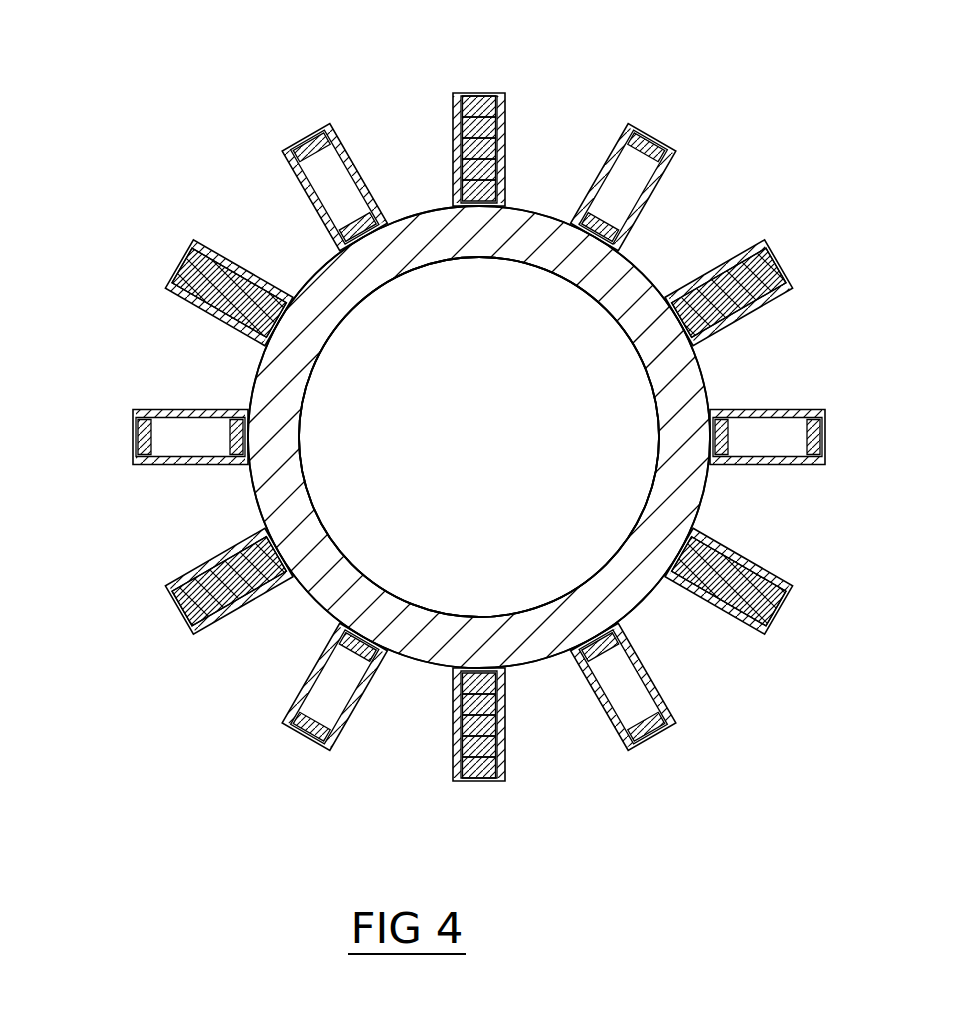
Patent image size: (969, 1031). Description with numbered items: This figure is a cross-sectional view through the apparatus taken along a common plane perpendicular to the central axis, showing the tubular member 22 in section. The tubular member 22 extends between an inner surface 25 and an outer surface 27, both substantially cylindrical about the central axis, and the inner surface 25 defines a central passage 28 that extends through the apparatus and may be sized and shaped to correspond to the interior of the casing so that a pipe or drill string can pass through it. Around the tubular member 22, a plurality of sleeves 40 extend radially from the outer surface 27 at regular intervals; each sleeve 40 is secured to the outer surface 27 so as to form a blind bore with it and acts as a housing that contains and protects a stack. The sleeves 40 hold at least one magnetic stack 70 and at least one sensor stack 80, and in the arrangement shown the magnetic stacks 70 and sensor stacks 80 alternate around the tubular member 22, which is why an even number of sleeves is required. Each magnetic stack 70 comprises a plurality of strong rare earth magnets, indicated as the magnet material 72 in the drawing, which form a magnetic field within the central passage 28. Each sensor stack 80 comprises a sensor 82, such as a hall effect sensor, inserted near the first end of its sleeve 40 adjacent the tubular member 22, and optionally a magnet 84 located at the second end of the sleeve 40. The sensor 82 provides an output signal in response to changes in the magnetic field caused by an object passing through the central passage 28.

The tubular member 22 is at (548, 210).
The inner surface 25 is at (544, 273).
The outer surface 27 is at (656, 279).
The central passage 28 is at (426, 300).
The sleeve 40 is at (452, 108).
The magnetic stack 70 is at (184, 257).
The filler material of arm 72 is at (220, 307).
The sensor stack 80 is at (304, 132).
The sensor 82 is at (355, 223).
The magnet 84 is at (293, 150).